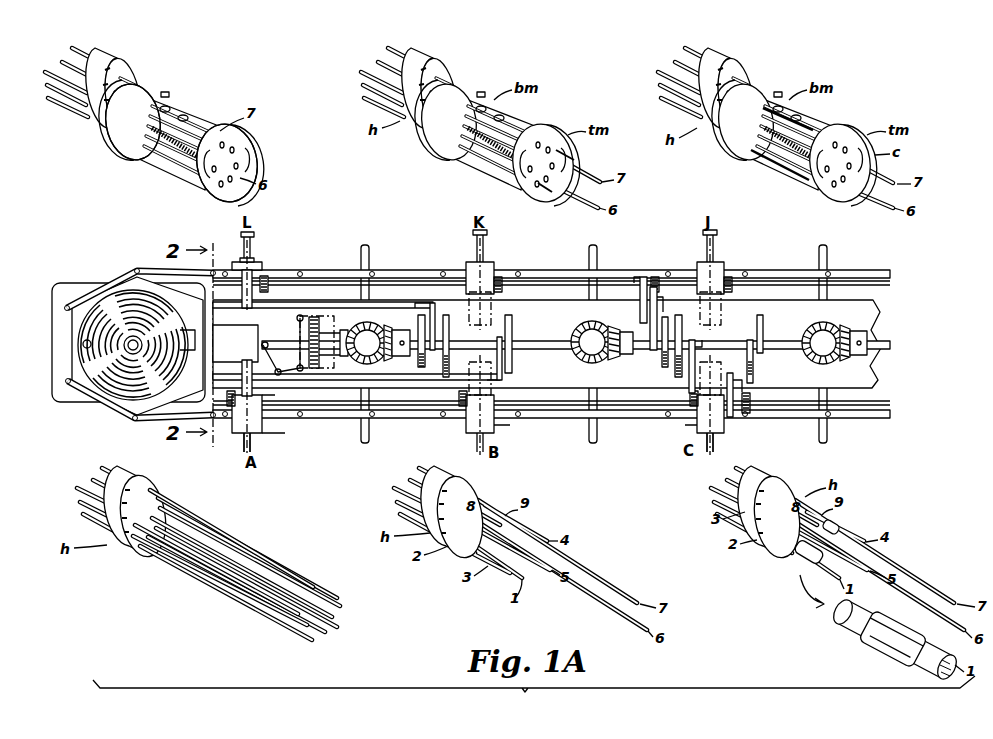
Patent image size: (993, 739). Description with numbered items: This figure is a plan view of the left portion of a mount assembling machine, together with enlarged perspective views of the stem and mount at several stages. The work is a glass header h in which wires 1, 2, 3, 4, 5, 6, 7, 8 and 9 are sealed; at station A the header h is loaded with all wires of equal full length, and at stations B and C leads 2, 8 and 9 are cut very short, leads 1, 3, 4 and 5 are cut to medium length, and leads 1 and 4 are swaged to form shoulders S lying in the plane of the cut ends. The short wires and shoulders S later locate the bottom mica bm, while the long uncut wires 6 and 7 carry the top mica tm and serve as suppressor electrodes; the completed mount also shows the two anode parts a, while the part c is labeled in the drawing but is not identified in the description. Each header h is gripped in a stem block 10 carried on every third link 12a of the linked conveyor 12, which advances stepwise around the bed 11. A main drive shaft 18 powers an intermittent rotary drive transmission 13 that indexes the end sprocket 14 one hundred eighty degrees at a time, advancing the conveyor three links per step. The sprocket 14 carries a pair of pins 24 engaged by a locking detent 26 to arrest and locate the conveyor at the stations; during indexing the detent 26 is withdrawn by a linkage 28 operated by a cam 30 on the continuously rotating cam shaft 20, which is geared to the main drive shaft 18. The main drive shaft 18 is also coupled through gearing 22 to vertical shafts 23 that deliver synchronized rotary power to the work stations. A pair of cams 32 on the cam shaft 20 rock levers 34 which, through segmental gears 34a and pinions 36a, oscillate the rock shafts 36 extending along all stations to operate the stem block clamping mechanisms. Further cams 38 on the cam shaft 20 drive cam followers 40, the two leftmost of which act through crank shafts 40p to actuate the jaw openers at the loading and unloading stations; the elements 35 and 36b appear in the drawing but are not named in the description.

The lead wire 1 is at (305, 641).
The lead wire 2 is at (290, 629).
The lead wire 3 is at (272, 615).
The lead wire 4 is at (334, 596).
The lead wire 5 is at (340, 628).
The lead wire 6 is at (326, 636).
The lead wire 7 is at (322, 578).
The lead wire 8 is at (336, 618).
The lead wire 9 is at (343, 606).
The stem block 10 is at (254, 434).
The bed 11 is at (534, 319).
The conveyor 12 is at (160, 420).
The third link 12a is at (278, 420).
The intermittent rotary drive transmission 13 is at (52, 307).
The end sprocket 14 is at (197, 303).
The main drive shaft 18 is at (350, 332).
The cam shaft 20 is at (781, 341).
The gearing 22 is at (370, 322).
The shaft 23 is at (369, 250).
The pin 24 is at (85, 348).
The locking detent 26 is at (190, 348).
The linkage 28 is at (279, 350).
The cam 30 is at (314, 318).
The cam 32 is at (763, 322).
The lever 34 is at (640, 318).
The segmental gear 34a is at (659, 300).
The gear unit 35 is at (236, 268).
The rock shaft 36 is at (890, 284).
The pinion 36a is at (655, 277).
The worm 36b is at (268, 280).
The cam 38 is at (444, 370).
The cam follower 40 is at (432, 306).
The crank shaft 40p is at (333, 300).
The glass header h is at (84, 131).
The bottom mica bm is at (170, 100).
The top mica tm is at (252, 137).
The cathode tab c is at (542, 170).
The anode part a is at (793, 142).
The swaged shoulder S is at (836, 522).